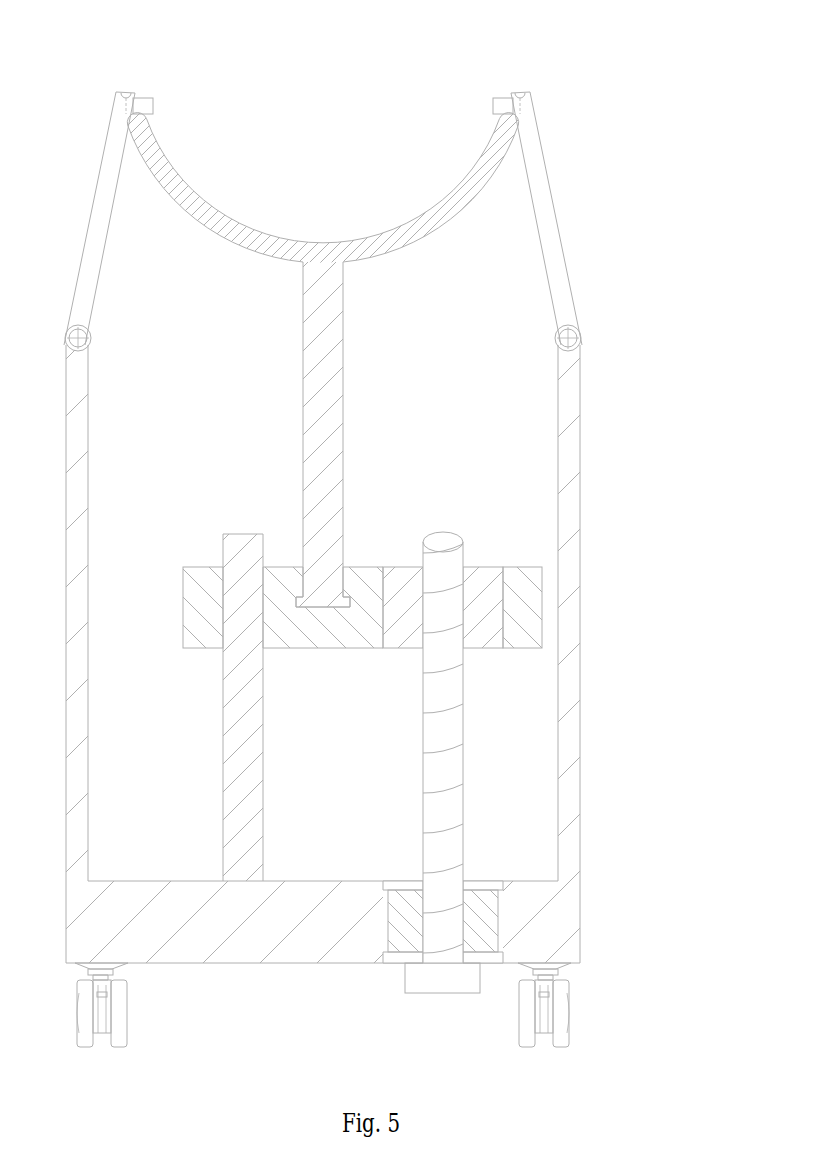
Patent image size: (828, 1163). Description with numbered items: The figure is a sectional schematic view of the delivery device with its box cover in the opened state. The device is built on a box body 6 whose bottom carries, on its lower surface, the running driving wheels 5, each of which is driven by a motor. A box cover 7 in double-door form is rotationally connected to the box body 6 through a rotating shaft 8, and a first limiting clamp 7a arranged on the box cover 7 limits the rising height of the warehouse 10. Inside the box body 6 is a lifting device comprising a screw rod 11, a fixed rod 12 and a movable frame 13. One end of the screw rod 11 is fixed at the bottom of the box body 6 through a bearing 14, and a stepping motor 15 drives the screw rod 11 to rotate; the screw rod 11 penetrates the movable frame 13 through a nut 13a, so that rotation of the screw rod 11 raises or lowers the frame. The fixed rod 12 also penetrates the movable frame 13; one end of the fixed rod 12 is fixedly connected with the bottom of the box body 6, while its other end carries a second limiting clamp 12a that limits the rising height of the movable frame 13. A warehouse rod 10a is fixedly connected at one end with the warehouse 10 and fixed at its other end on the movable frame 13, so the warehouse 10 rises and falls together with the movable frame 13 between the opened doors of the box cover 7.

The running driving wheel 5 is at (563, 1023).
The box body 6 is at (571, 766).
The box cover 7 is at (553, 248).
The first limiting clamp 7a is at (507, 107).
The rotating shaft 8 is at (577, 325).
The warehouse 10 is at (193, 193).
The warehouse rod 10a is at (324, 440).
The screw rod 11 is at (453, 558).
The fixed rod 12 is at (237, 812).
The second limiting clamp 12a is at (282, 547).
The movable frame 13 is at (197, 588).
The nut 13a is at (396, 580).
The bearing 14 is at (403, 905).
The stepping motor 15 is at (405, 993).